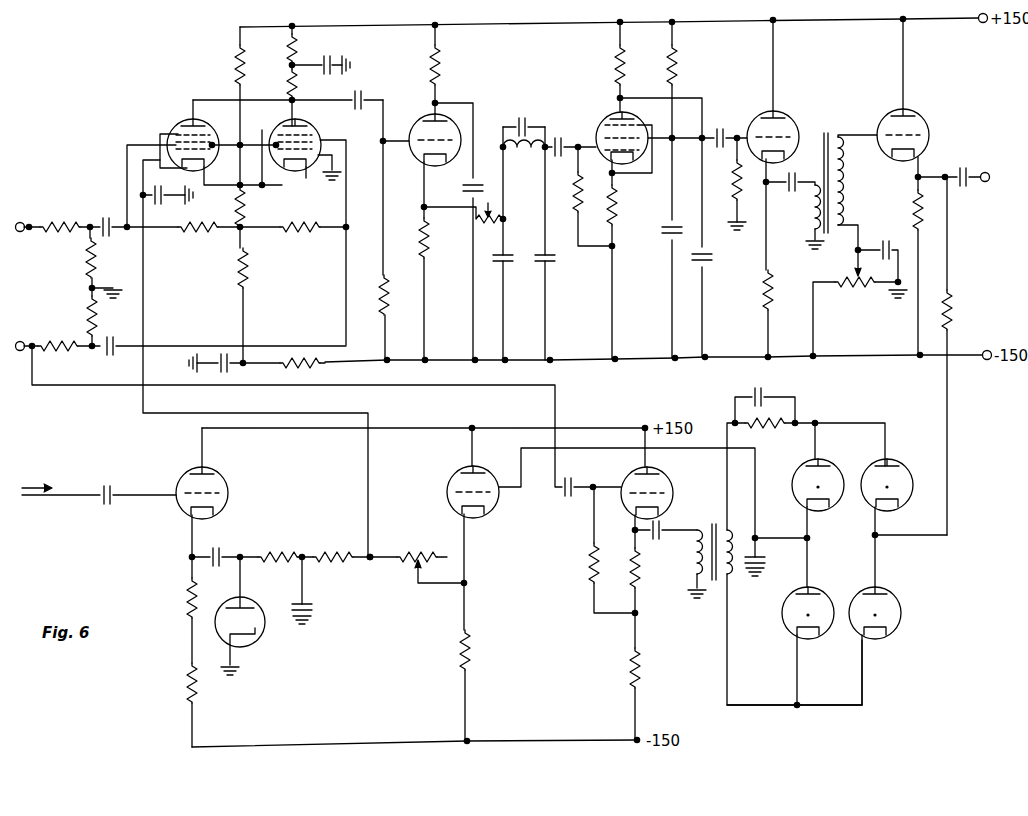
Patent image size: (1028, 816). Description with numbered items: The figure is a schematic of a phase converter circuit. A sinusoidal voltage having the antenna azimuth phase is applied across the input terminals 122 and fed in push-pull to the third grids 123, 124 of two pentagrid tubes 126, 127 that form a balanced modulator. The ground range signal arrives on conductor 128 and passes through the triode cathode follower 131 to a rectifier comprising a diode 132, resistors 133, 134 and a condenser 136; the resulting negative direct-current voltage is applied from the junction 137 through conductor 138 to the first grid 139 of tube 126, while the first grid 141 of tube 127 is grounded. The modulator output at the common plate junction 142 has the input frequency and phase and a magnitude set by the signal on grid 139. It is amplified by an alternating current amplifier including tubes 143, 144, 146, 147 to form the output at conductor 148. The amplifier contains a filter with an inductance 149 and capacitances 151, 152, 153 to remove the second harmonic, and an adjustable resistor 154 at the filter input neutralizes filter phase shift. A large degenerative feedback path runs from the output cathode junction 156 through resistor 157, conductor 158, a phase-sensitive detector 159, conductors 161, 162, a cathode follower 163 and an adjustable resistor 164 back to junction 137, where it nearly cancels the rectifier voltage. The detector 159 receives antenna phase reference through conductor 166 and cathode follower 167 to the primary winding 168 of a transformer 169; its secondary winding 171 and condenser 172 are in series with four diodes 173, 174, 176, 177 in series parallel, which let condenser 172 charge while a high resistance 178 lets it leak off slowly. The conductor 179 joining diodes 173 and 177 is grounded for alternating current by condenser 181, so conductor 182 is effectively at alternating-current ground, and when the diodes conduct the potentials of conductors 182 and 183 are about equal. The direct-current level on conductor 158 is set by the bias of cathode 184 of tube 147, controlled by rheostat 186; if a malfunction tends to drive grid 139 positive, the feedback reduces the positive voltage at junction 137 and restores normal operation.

The input terminals 122 is at (19, 224).
The third grid 123 is at (178, 134).
The third grid 124 is at (322, 138).
The pentagrid tube 126 is at (176, 109).
The pentagrid tube 127 is at (310, 120).
The conductor 128 is at (85, 492).
The triode cathode follower 131 is at (190, 471).
The diode 132 is at (258, 645).
The resistor 133 is at (258, 555).
The resistor 134 is at (321, 555).
The condenser 136 is at (308, 598).
The junction 137 is at (370, 560).
The conductor 138 is at (368, 487).
The first grid 139 is at (184, 160).
The first grid 141 is at (318, 171).
The common plate junction 142 is at (293, 101).
The tube 143 is at (420, 118).
The tube 144 is at (608, 114).
The tube 146 is at (759, 114).
The tube 147 is at (888, 109).
The output conductor 148 is at (976, 175).
The inductance 149 is at (520, 148).
The capacitance 151 is at (506, 255).
The capacitance 152 is at (531, 120).
The capacitance 153 is at (545, 259).
The adjustable resistor 154 is at (465, 226).
The output cathode junction 156 is at (948, 175).
The resistor 157 is at (952, 309).
The conductor 158 is at (917, 542).
The phase-sensitive detector 159 is at (843, 547).
The conductor 161 is at (790, 518).
The conductor 162 is at (547, 436).
The cathode follower 163 is at (460, 466).
The adjustable resistor 164 is at (400, 551).
The conductor 166 is at (40, 363).
The cathode follower 167 is at (672, 482).
The primary winding 168 is at (662, 560).
The transformer 169 is at (708, 528).
The secondary winding 171 is at (731, 528).
The condenser 172 is at (751, 393).
The diode 173 is at (843, 466).
The diode 174 is at (900, 464).
The diode 176 is at (892, 630).
The diode 177 is at (786, 633).
The high resistance 178 is at (748, 431).
The conductor 179 is at (810, 579).
The condenser 181 is at (764, 548).
The conductor 182 is at (815, 706).
The conductor 183 is at (858, 423).
The cathode 184 is at (925, 153).
The rheostat 186 is at (842, 290).